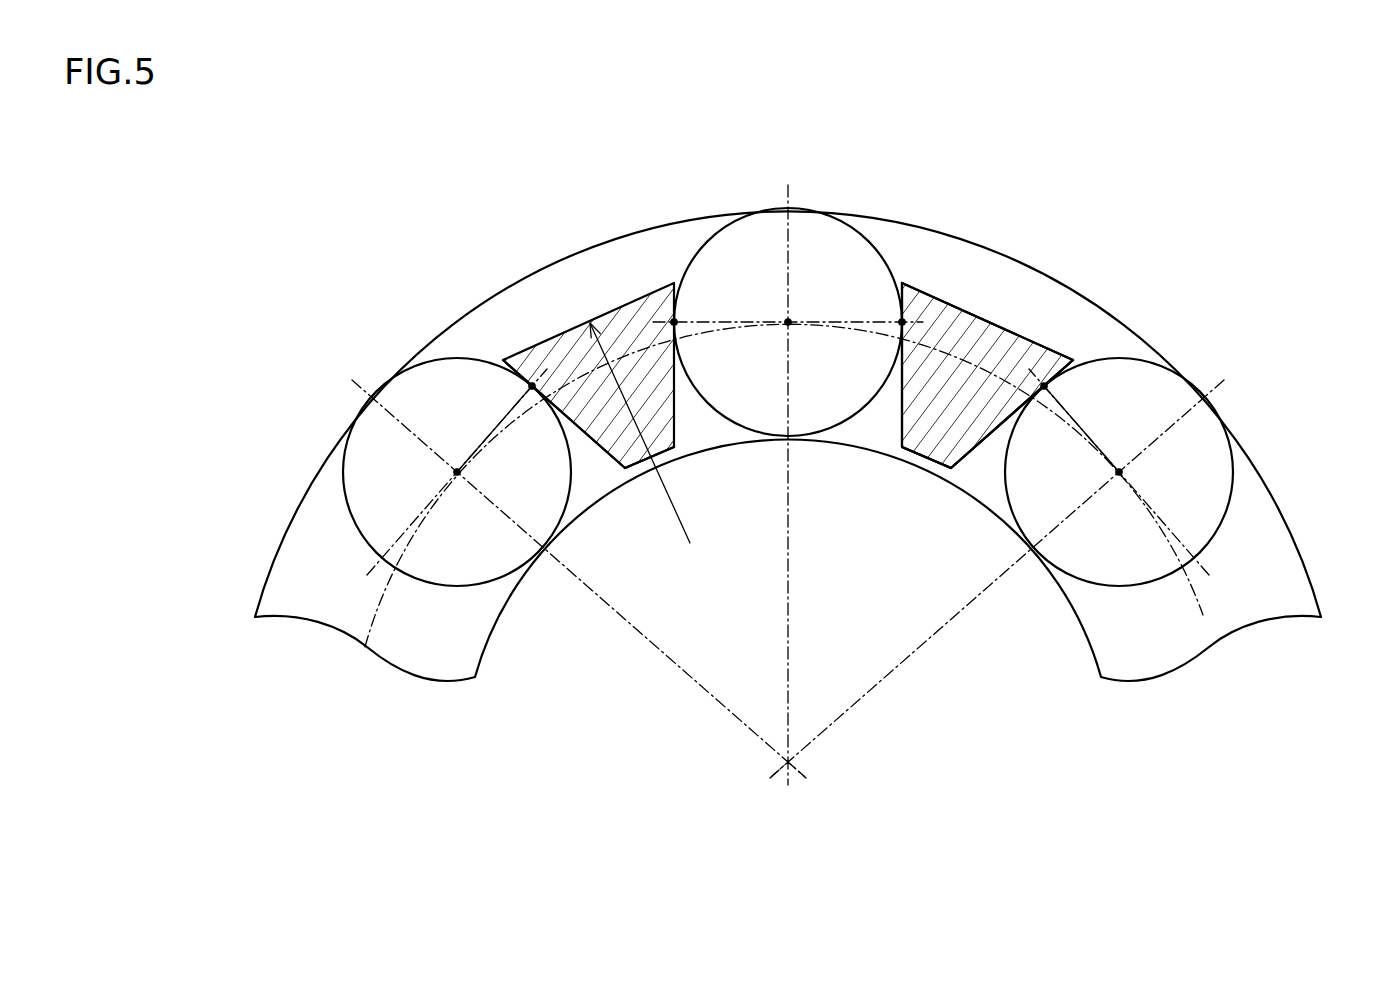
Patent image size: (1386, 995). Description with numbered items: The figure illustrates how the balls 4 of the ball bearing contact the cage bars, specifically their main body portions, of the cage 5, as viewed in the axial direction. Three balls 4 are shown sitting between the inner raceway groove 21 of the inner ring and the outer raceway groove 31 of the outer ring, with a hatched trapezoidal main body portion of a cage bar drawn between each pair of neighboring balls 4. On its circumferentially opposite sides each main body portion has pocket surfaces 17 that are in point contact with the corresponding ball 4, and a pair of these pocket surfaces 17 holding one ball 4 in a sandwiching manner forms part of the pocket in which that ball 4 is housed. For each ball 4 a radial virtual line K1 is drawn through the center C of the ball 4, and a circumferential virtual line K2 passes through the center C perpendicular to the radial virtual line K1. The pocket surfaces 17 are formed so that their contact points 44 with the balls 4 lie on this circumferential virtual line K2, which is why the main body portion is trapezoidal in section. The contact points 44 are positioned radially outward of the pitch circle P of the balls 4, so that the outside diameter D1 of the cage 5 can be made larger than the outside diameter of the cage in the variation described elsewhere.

The ball 4 is at (752, 408).
The cage 5 is at (1020, 333).
The pocket surface 17 is at (596, 445).
The inner raceway groove 21 is at (873, 217).
The outer raceway groove 31 is at (838, 441).
The contact point 44 is at (674, 322).
The radial virtual line K1 is at (790, 197).
The circumferential virtual line K2 is at (873, 330).
The center of the ball C is at (788, 322).
The outside diameter of the cage D1 is at (678, 514).
The pitch circle P is at (1203, 615).